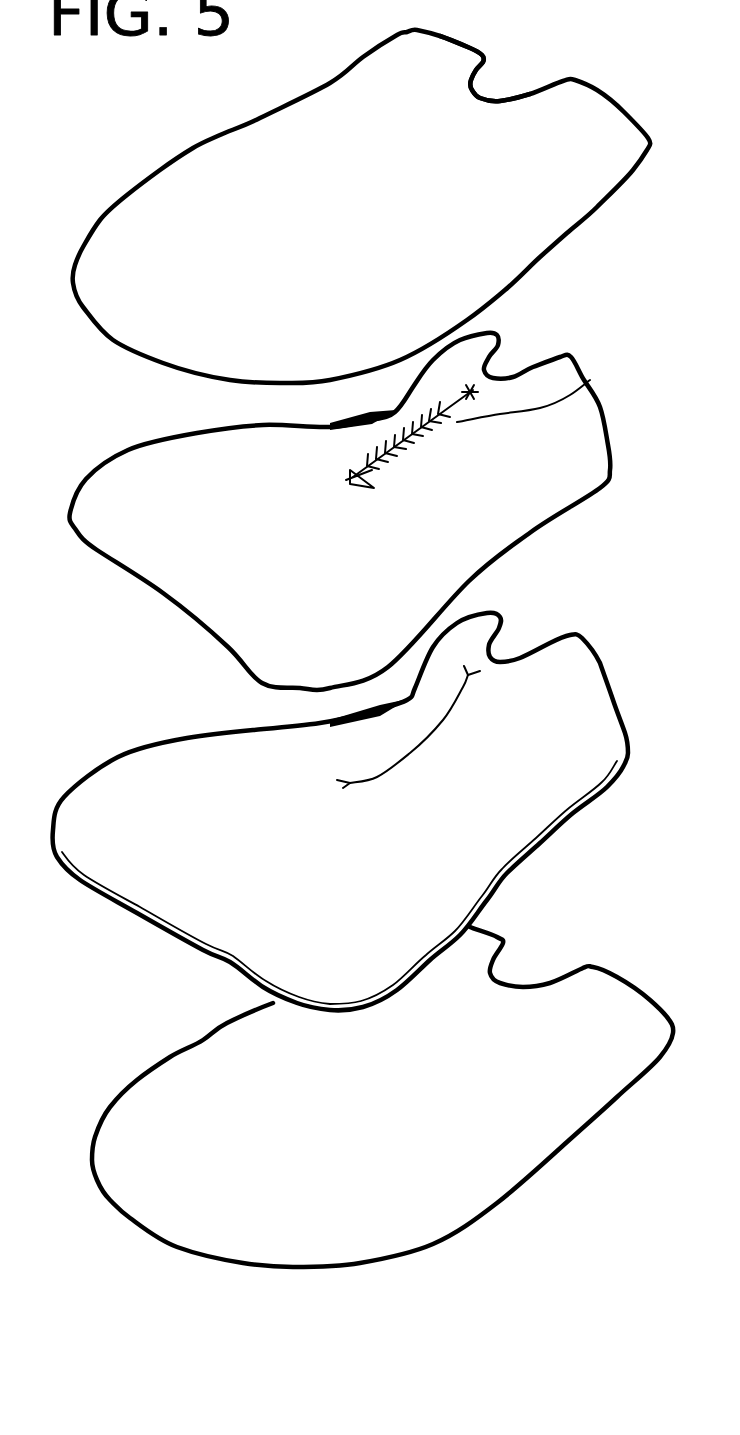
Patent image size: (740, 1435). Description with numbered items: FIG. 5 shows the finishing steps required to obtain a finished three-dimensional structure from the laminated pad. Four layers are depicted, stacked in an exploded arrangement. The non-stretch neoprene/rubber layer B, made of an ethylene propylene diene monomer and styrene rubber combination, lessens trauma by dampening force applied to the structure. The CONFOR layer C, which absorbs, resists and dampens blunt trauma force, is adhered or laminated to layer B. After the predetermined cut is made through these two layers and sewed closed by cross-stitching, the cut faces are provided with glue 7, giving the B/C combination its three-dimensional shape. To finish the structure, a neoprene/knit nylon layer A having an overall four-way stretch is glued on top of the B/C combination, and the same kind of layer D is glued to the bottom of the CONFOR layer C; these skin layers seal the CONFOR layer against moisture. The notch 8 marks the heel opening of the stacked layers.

The neoprene/knit nylon layer A is at (147, 278).
The non-stretch neoprene/rubber layer B is at (168, 532).
The CONFOR layer C is at (153, 848).
The neoprene/knit nylon layer D is at (138, 1178).
The glue 7 is at (590, 380).
The notch between tongue and collar 8 is at (507, 82).